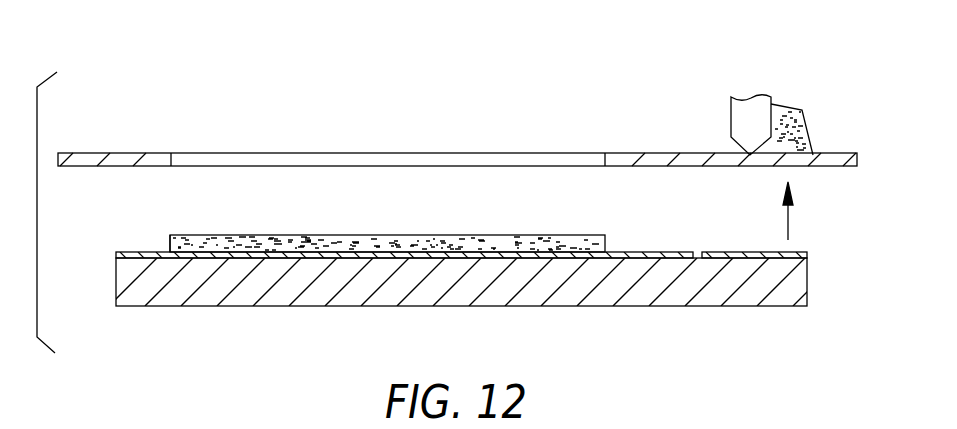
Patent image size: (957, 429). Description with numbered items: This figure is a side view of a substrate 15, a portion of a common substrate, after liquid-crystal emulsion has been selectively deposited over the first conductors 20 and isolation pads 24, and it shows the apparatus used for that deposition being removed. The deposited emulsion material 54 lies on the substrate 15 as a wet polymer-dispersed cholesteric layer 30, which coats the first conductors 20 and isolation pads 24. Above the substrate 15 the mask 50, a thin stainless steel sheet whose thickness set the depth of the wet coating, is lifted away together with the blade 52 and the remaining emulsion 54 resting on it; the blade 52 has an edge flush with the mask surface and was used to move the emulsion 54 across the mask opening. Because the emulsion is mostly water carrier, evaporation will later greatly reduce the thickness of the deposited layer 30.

The substrate 15 is at (292, 288).
The isolation pads 24 is at (645, 253).
The first conductors 20 is at (400, 240).
The polymer-dispersed cholesteric layer 30 is at (168, 237).
The mask 50 is at (123, 152).
The blade 52 is at (750, 107).
The emulsion 54 is at (792, 110).